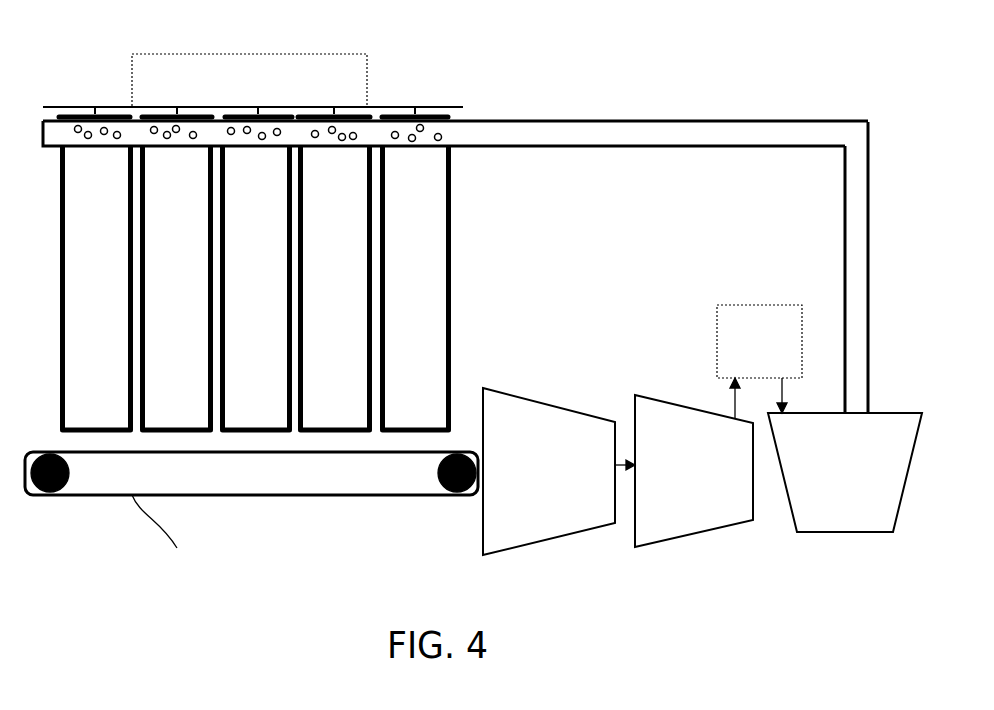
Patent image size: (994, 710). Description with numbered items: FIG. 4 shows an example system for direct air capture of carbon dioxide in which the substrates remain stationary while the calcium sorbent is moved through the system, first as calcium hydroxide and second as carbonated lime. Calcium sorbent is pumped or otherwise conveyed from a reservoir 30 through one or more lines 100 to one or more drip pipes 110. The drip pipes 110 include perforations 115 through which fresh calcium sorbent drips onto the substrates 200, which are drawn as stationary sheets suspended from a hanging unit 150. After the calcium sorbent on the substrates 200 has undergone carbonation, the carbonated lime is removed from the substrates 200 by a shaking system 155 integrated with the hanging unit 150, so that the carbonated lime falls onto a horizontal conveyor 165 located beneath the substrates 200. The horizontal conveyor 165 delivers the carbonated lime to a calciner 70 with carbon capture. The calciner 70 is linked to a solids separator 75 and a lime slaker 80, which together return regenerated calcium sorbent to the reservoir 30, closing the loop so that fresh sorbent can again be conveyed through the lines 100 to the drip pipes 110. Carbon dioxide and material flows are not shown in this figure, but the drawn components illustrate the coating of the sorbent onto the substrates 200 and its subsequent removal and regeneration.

The shaking system 155 is at (367, 68).
The hanging unit 150 is at (443, 107).
The perforations 115 is at (430, 128).
The drip pipes 110 is at (555, 147).
The lines 100 is at (845, 214).
The substrates 200 is at (452, 317).
The horizontal conveyor 165 is at (223, 495).
The calciner 70 is at (585, 532).
The solids separator 75 is at (725, 530).
The lime slaker 80 is at (717, 320).
The reservoir 30 is at (862, 532).